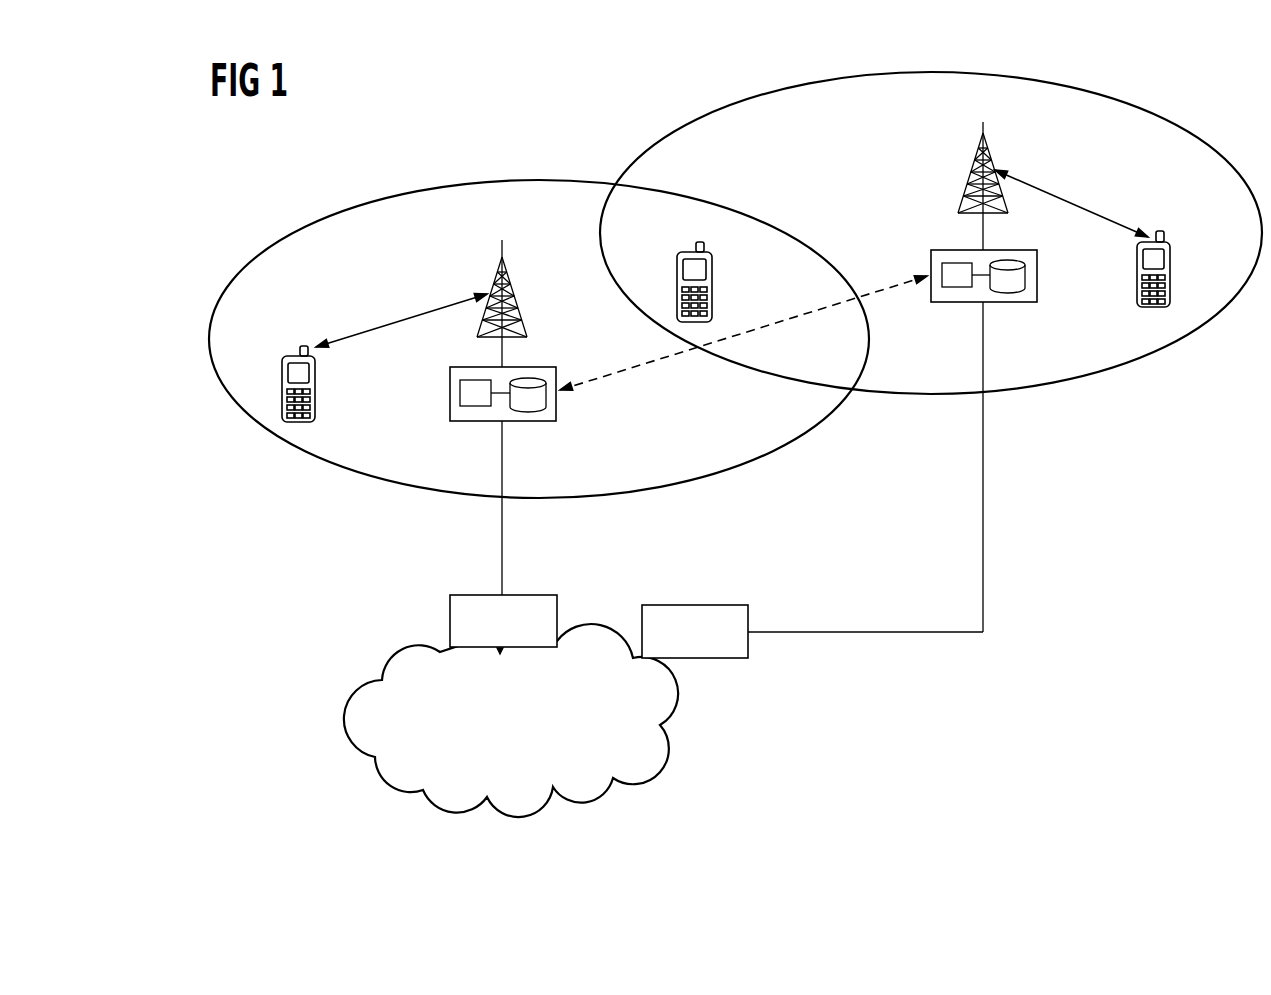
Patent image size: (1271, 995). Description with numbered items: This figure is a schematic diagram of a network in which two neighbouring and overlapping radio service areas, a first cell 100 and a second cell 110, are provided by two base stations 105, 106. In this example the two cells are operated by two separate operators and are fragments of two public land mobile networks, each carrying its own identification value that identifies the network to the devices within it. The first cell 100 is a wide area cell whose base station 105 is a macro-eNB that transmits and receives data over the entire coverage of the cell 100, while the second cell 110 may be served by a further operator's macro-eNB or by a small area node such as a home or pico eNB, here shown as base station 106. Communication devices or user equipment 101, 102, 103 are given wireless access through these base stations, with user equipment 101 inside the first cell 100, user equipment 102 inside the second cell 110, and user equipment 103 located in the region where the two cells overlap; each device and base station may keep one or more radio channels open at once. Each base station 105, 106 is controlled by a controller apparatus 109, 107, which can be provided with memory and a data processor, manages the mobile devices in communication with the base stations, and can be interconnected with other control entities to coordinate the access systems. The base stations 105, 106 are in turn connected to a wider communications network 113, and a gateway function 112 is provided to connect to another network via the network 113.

The first cell 100 is at (539, 180).
The second cell 110 is at (708, 111).
The user equipment 101 is at (317, 390).
The user equipment 102 is at (1172, 275).
The user equipment 103 is at (714, 288).
The base station 105 is at (519, 291).
The base station 106 is at (972, 174).
The controller apparatus 107 is at (1038, 276).
The controller apparatus 109 is at (450, 400).
The gateway function 112 is at (450, 620).
The wider communications network 113 is at (342, 720).